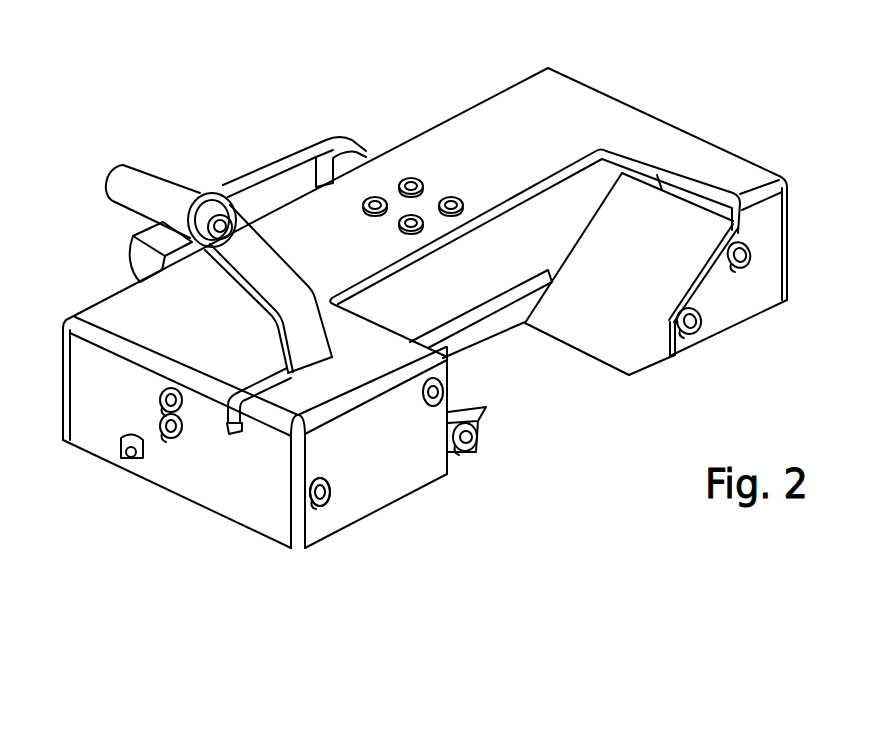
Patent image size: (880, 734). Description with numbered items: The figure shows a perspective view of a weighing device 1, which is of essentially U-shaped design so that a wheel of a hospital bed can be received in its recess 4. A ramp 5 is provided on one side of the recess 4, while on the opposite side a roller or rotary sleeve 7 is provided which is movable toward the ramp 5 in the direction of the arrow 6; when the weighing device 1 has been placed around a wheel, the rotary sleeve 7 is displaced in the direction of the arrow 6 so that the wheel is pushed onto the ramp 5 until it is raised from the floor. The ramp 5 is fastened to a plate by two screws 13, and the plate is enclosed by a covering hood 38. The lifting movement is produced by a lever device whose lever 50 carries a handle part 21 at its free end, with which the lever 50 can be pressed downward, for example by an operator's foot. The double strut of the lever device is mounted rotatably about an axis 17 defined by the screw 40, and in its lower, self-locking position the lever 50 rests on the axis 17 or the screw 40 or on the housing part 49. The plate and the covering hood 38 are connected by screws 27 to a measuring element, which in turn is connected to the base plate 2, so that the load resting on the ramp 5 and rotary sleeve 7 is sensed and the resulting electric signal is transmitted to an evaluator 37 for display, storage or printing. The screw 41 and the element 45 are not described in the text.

The weighing device 1 is at (686, 113).
The base plate 2 is at (486, 325).
The recess 4 is at (496, 395).
The ramp 5 is at (605, 330).
The arrow 6 is at (489, 407).
The rotary sleeve 7 is at (483, 409).
The screws 13 is at (745, 268).
The axis 17 is at (330, 498).
The handle part 21 is at (140, 177).
The screws 27 is at (411, 179).
The evaluator 37 is at (169, 438).
The covering hood 38 is at (117, 304).
The screw 40 is at (320, 506).
The screw 41 is at (433, 406).
The handle 45 is at (346, 150).
The housing part 49 is at (234, 434).
The lever 50 is at (252, 255).